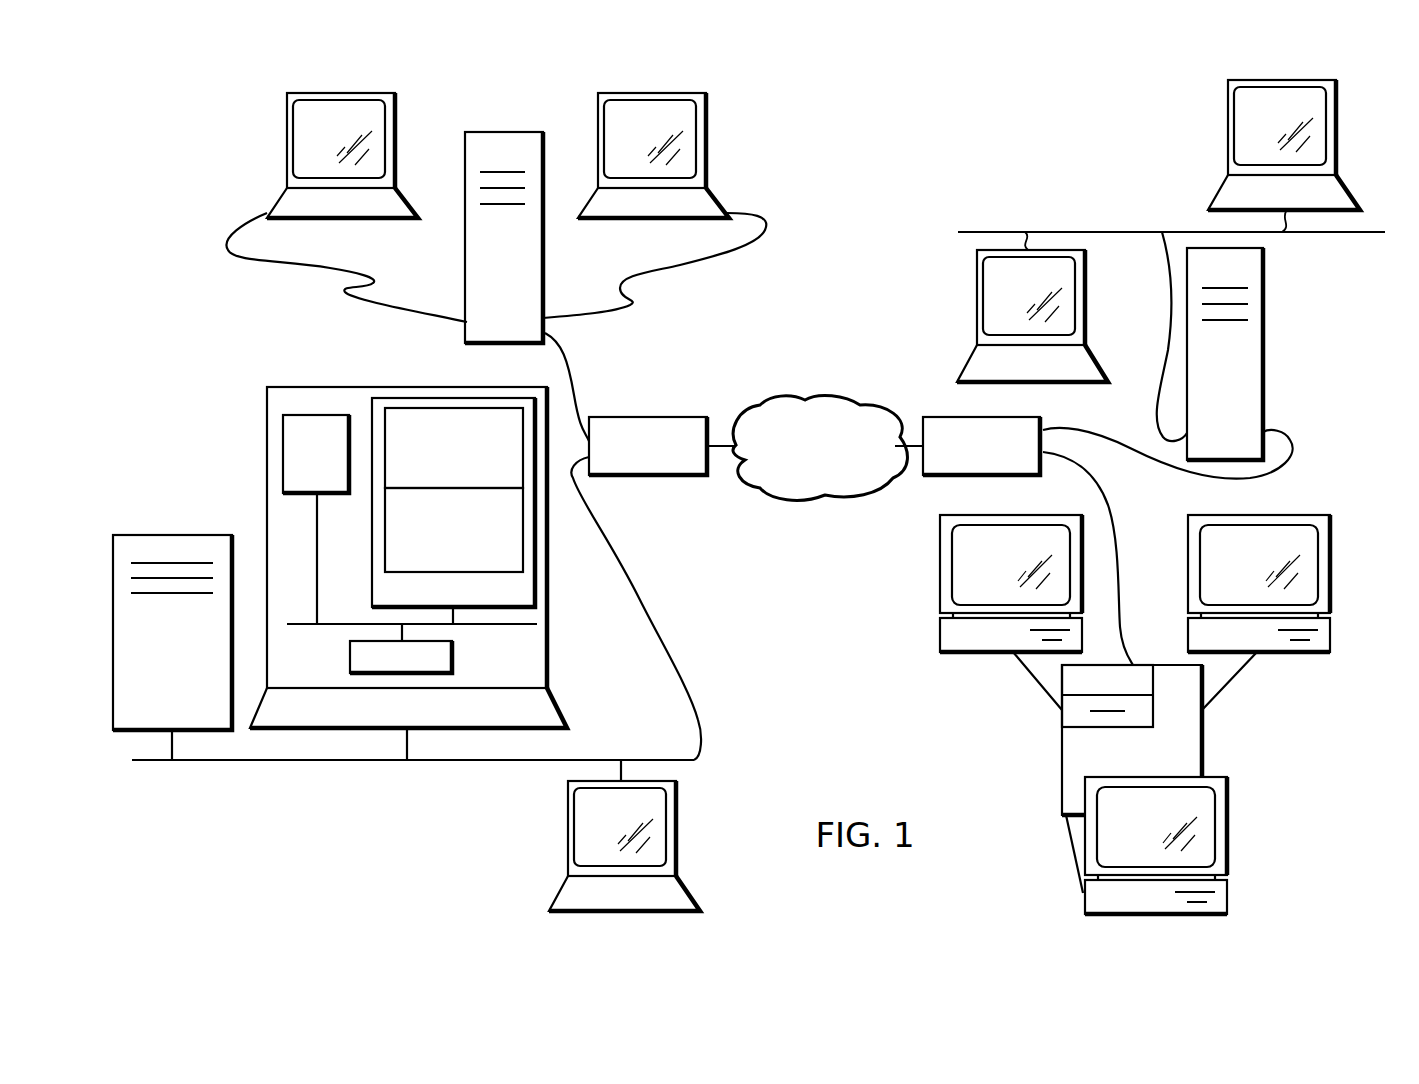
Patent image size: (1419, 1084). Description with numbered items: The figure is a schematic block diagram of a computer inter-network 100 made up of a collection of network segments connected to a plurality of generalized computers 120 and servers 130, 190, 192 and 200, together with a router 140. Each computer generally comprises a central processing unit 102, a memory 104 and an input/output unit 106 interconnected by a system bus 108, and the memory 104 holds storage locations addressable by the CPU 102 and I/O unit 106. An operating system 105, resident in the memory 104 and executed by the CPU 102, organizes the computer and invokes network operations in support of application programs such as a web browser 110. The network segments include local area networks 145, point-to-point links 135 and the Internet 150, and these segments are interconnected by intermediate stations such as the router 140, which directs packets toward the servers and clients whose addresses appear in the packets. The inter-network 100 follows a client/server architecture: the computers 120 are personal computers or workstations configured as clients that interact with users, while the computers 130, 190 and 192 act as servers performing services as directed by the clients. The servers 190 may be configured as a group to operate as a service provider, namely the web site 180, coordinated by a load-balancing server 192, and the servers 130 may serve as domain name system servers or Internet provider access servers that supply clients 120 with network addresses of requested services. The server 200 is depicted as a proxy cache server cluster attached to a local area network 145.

The computer inter-network 100 is at (258, 140).
The generalized computer 120 is at (397, 128).
The server 130 is at (503, 132).
The point-to-point link 135 is at (290, 262).
The local area network 145 is at (975, 231).
The router 140 is at (652, 417).
The Internet 150 is at (836, 485).
The server 200 is at (192, 535).
The central processing unit 102 is at (331, 482).
The memory 104 is at (453, 502).
The web browser 110 is at (469, 481).
The operating system 105 is at (469, 567).
The system bus 108 is at (300, 626).
The input/output unit 106 is at (411, 669).
The server 190 is at (940, 648).
The load-balancing server 192 is at (1205, 737).
The web site 180 is at (1050, 864).